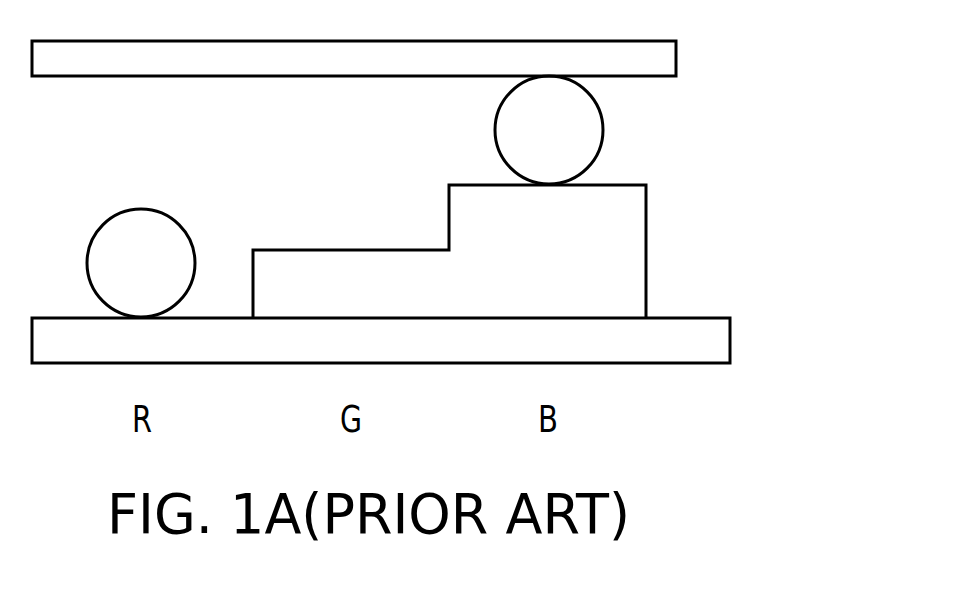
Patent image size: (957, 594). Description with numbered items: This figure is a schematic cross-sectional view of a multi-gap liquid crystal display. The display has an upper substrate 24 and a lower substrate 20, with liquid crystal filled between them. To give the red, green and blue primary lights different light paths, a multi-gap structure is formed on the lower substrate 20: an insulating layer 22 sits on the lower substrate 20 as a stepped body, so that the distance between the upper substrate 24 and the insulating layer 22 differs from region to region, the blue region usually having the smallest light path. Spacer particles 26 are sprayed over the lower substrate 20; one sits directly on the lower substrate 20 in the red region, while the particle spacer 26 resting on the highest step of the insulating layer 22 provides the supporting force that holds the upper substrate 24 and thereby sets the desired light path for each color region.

The lower substrate 20 is at (707, 343).
The insulating layer 22 is at (617, 258).
The upper substrate 24 is at (653, 60).
The particle spacer 26 is at (563, 133).